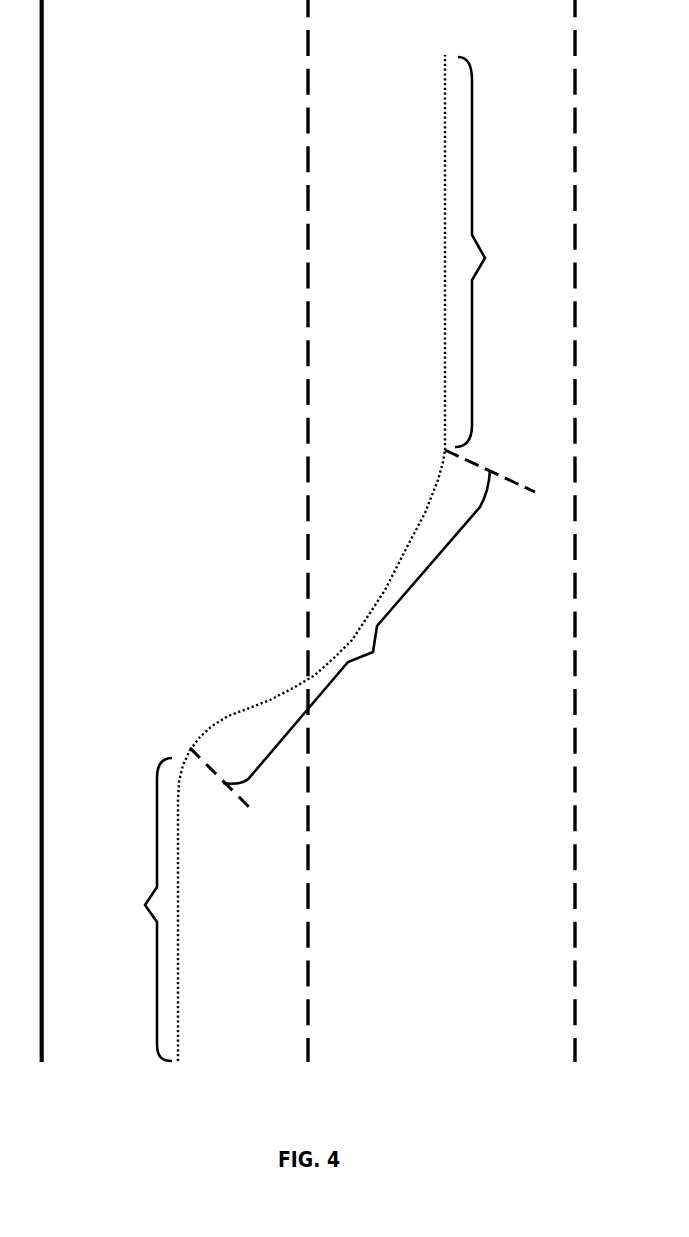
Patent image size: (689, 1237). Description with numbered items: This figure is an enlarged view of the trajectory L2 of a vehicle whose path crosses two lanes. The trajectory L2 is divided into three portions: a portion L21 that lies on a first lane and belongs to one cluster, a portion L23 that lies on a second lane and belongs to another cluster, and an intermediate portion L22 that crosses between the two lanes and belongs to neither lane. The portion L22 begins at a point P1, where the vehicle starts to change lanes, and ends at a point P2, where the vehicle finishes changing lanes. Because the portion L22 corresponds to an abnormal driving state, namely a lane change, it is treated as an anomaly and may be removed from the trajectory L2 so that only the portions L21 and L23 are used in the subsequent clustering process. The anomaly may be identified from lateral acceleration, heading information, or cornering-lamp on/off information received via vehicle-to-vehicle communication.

The trajectory L2 is at (319, 558).
The portion of the trajectory L21 is at (139, 905).
The portion of the trajectory L22 is at (340, 617).
The portion of the trajectory L23 is at (497, 252).
The point P1 is at (207, 757).
The point P2 is at (466, 464).